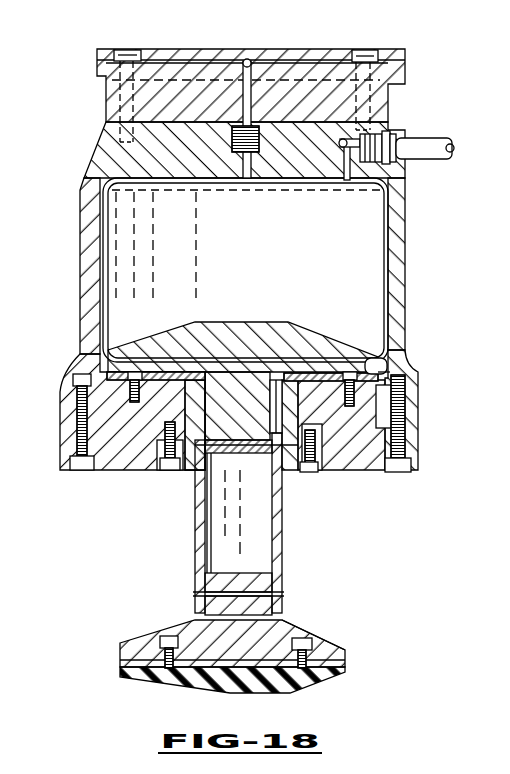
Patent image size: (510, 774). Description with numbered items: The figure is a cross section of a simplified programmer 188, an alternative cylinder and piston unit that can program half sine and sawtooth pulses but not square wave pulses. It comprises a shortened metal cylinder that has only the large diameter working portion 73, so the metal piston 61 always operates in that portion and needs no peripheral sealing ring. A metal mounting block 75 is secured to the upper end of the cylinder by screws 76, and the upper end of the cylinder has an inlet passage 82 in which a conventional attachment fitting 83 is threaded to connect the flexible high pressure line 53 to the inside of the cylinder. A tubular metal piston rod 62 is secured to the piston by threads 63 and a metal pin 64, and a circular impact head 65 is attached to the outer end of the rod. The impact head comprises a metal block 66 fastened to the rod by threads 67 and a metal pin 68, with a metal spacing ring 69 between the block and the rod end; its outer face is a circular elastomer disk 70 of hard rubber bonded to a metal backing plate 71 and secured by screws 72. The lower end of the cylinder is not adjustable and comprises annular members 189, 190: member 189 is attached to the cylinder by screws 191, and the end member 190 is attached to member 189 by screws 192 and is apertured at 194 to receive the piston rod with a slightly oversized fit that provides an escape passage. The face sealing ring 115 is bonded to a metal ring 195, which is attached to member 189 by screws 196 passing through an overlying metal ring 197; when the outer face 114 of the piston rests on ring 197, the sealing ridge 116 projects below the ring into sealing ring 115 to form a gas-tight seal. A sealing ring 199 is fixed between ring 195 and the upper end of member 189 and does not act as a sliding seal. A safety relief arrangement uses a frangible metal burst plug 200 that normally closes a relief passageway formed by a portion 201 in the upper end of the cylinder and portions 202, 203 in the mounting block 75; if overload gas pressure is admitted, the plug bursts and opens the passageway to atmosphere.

The flexible high pressure line 53 is at (441, 159).
The metal piston 61 is at (226, 322).
The tubular metal piston rod 62 is at (283, 563).
The threads 63 is at (265, 462).
The metal pin 64 is at (268, 455).
The circular impact head 65 is at (112, 660).
The metal block 66 is at (335, 643).
The retaining ring 67 is at (198, 595).
The metal pin 68 is at (205, 584).
The metal spacing ring 69 is at (286, 621).
The circular disk of elastomer material 70 is at (140, 680).
The metal backing plate 71 is at (345, 672).
The screws 72 is at (165, 640).
The inside wall portion of relatively large diameter 73 is at (388, 242).
The metal mounting block 75 is at (106, 105).
The screws 76 is at (122, 52).
The inlet passage 82 is at (342, 182).
The attachment fitting 83 is at (393, 134).
The outer face of the piston 114 is at (280, 376).
The face sealing ring 115 is at (382, 374).
The sealing ridge 116 is at (374, 360).
The programmer 188 is at (418, 267).
The annular member 189 is at (365, 472).
The annular end member 190 is at (288, 477).
The screws 191 is at (398, 472).
The screws 192 is at (306, 472).
The aperture 194 is at (205, 470).
The metal ring 195 is at (110, 374).
The screws 196 is at (352, 372).
The overlying metal ring 197 is at (312, 372).
The sealing ring 199 is at (76, 396).
The frangible metal burst plug 200 is at (256, 158).
The relief passageway portion 201 is at (243, 185).
The relief passageway portion 202 is at (250, 95).
The relief passageway portion 203 is at (186, 62).